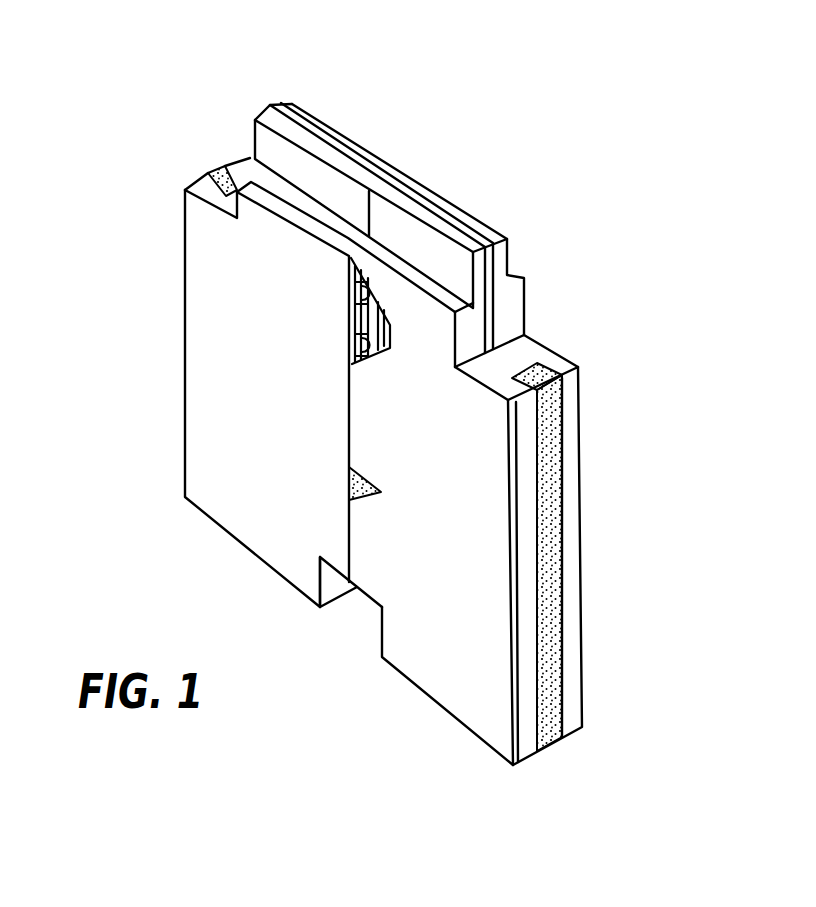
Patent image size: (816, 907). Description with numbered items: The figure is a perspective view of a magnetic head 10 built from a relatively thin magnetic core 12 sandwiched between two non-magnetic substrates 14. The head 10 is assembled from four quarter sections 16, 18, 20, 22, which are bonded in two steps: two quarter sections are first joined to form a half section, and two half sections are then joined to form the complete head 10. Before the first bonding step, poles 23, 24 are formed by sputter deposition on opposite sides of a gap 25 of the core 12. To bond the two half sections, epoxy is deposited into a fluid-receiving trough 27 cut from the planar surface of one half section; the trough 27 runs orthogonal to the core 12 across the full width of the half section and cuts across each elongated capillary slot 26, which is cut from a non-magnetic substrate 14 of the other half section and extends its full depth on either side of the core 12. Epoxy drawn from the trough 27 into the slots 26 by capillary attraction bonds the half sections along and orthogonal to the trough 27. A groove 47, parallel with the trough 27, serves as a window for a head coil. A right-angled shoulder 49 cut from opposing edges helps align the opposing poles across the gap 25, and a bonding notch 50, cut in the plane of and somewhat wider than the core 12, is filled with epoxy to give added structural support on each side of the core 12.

The magnetic head 10 is at (560, 263).
The magnetic core 12 is at (454, 224).
The non-magnetic substrate 14 is at (573, 437).
The quarter section 16 is at (227, 455).
The quarter section 18 is at (292, 106).
The quarter section 20 is at (430, 628).
The quarter section 22 is at (570, 628).
The pole 23 is at (343, 156).
The pole 24 is at (416, 202).
The gap 25 is at (384, 180).
The capillary slot 26 is at (350, 306).
The fluid-receiving trough 27 is at (353, 497).
The groove 47 is at (355, 347).
The right-angled shoulder 49 is at (333, 590).
The bonding notch 50 is at (214, 176).